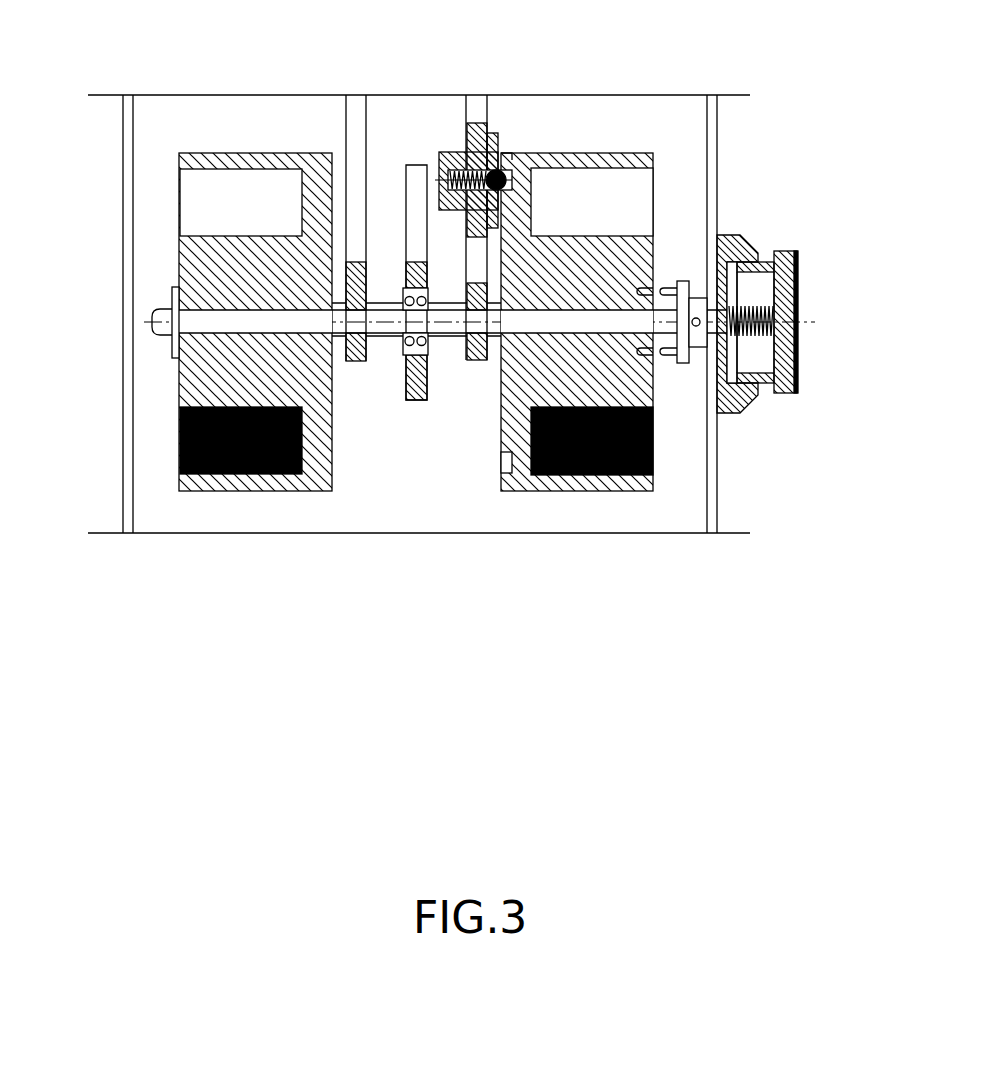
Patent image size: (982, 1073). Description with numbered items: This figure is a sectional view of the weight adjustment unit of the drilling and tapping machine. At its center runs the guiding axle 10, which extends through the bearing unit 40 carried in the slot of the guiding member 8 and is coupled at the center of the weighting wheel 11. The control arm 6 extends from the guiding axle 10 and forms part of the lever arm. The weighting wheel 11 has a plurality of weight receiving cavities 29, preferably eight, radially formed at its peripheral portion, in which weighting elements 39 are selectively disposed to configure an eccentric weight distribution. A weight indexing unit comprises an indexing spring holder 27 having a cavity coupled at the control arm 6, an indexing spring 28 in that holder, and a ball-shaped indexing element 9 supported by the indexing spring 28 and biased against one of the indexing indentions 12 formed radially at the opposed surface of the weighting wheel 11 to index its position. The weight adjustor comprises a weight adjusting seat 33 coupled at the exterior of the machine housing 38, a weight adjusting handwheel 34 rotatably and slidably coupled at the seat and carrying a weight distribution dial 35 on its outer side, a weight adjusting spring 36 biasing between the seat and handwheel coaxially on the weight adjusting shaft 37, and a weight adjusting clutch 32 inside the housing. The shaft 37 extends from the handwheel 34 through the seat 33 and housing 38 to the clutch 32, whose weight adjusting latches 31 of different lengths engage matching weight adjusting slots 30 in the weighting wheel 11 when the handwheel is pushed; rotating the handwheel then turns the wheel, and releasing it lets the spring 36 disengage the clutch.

The control arm 6 is at (357, 118).
The guiding member 8 is at (415, 398).
The indexing element 9 is at (497, 172).
The guiding axle 10 is at (193, 317).
The weighting wheel 11 is at (218, 155).
The indexing indentions 12 is at (503, 157).
The indexing spring holder 27 is at (448, 152).
The indexing spring 28 is at (478, 105).
The weight receiving cavities 29 is at (612, 195).
The weight adjusting slots 30 is at (653, 286).
The weight adjusting latches 31 is at (664, 292).
The weight adjusting clutch 32 is at (683, 288).
The weight adjusting seat 33 is at (750, 245).
The weight adjusting handwheel 34 is at (787, 253).
The weight distribution dial 35 is at (798, 297).
The weight adjusting spring 36 is at (797, 392).
The weight adjusting shaft 37 is at (752, 395).
The machine housing 38 is at (713, 435).
The weighting elements 39 is at (570, 473).
The bearing unit 40 is at (400, 355).